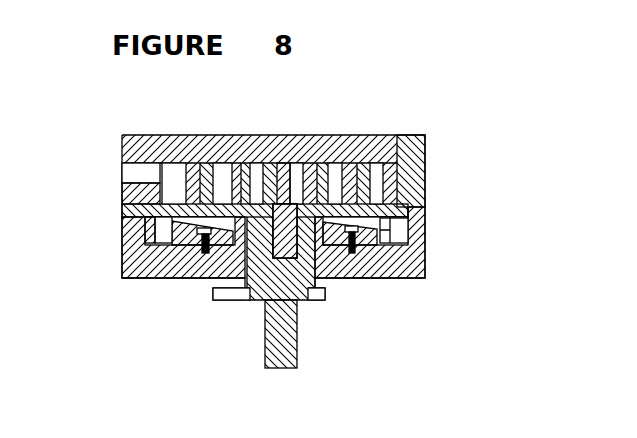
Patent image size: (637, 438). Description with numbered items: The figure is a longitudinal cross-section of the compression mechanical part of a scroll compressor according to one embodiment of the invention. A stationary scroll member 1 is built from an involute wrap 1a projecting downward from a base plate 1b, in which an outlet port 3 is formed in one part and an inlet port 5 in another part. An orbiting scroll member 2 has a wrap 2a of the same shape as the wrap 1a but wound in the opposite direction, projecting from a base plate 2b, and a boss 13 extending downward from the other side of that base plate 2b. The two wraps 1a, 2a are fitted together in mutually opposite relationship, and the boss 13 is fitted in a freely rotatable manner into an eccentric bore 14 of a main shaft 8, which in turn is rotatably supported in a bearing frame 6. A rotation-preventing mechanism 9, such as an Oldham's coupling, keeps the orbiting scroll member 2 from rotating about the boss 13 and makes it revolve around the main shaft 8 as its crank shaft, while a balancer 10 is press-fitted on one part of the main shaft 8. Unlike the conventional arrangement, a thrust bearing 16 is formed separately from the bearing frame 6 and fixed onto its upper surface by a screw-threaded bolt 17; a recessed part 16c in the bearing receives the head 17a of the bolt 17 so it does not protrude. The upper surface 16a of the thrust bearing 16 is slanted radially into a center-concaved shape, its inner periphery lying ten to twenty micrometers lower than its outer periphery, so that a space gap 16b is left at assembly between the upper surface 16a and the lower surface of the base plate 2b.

The stationary scroll member 1 is at (153, 128).
The wrap 1a is at (257, 163).
The base plate 1b is at (193, 137).
The orbiting scroll member 2 is at (147, 212).
The wrap 2a is at (335, 215).
The base plate 2b is at (410, 200).
The outlet port 3 is at (290, 163).
The inlet port 5 is at (130, 172).
The bearing frame 6 is at (130, 255).
The main shaft 8 is at (285, 352).
The rotation-preventing mechanism 9 is at (405, 232).
The balancer 10 is at (222, 300).
The boss 13 is at (305, 300).
The eccentric bore 14 is at (263, 300).
The thrust bearing 16 is at (373, 226).
The upper surface 16a is at (345, 210).
The space gap 16b is at (343, 205).
The recessed part 16c is at (368, 218).
The screw-threaded bolt 17 is at (205, 256).
The head 17a is at (190, 240).